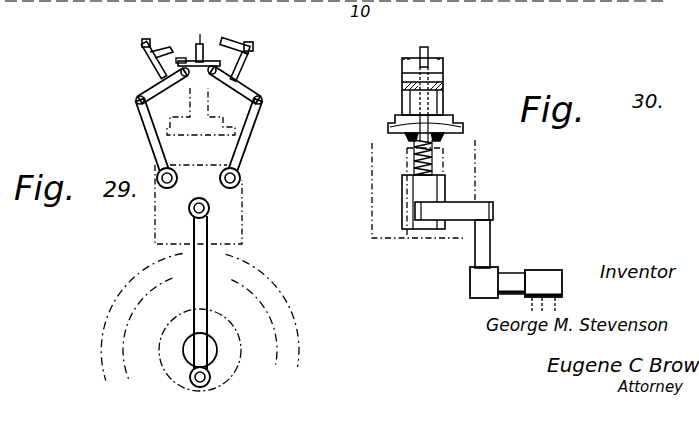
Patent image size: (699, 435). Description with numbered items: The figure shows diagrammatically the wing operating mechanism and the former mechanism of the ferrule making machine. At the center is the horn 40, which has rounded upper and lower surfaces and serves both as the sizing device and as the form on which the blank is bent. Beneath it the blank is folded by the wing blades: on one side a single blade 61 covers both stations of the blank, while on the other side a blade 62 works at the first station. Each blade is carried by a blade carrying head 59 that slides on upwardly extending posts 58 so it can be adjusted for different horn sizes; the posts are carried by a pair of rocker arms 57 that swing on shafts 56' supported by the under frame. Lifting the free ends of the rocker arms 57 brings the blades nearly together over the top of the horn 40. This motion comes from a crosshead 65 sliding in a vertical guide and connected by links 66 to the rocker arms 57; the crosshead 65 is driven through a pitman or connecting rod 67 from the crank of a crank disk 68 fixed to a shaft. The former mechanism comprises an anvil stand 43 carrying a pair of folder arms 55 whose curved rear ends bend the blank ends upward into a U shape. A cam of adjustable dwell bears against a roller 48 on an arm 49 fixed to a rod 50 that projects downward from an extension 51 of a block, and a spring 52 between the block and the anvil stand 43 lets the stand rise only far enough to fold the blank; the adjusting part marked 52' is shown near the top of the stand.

In FIG. 29, the horn 40 is at (202, 46).
In FIG. 29, the blade 62 is at (170, 52).
In FIG. 29, the single blade 61 is at (226, 42).
In FIG. 29, the blade carrying head 59 is at (236, 65).
In FIG. 29, the posts 58 is at (244, 66).
In FIG. 29, the shafts 56' is at (222, 76).
In FIG. 29, the adjusting screw 52' is at (137, 82).
In FIG. 30, the adjusting screw 52' is at (443, 66).
In FIG. 29, the rocker arms 57 is at (252, 91).
In FIG. 29, the links 66 is at (249, 128).
In FIG. 29, the crosshead 65 is at (243, 204).
In FIG. 29, the connecting rod 67 is at (204, 267).
In FIG. 29, the crank disk 68 is at (232, 343).
In FIG. 30, the anvil stand 43 is at (417, 99).
In FIG. 30, the folder arms 55 is at (429, 60).
In FIG. 30, the spring 52 is at (462, 156).
In FIG. 30, the extension 51 is at (453, 212).
In FIG. 30, the rod 50 is at (492, 227).
In FIG. 30, the arm 49 is at (470, 287).
In FIG. 30, the roller 48 is at (538, 270).